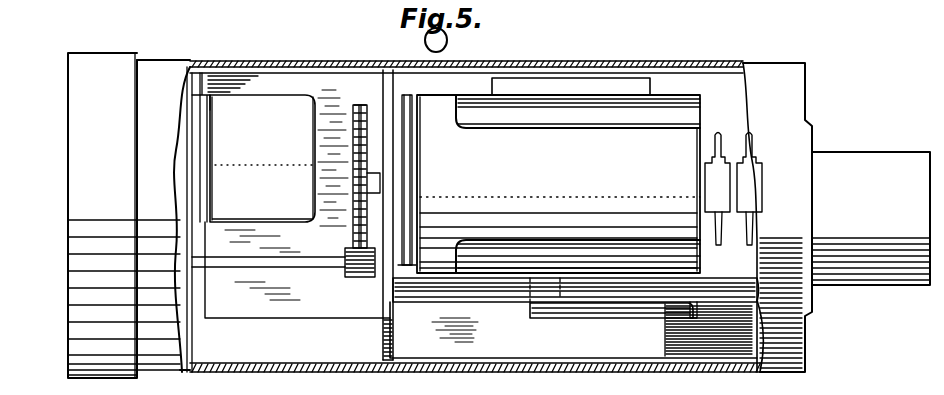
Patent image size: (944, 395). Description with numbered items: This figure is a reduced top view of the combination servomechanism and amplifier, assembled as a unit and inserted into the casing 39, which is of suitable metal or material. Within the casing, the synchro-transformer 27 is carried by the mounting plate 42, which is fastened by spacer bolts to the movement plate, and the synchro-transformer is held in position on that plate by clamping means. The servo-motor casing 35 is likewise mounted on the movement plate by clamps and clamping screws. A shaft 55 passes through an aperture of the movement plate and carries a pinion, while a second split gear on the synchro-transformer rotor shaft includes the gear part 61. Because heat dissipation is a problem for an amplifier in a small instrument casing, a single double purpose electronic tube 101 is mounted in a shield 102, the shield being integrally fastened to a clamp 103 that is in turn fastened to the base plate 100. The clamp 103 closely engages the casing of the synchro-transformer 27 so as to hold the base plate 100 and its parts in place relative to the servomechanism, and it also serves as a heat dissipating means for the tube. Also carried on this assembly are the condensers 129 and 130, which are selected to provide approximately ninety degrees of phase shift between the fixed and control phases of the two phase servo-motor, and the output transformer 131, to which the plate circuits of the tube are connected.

The synchro-transformer 27 is at (571, 152).
The servo-motor casing 35 is at (277, 103).
The casing 39 is at (545, 62).
The mounting plate 42 is at (408, 86).
The shaft 55 is at (272, 260).
The split gear part 61 is at (361, 105).
The base plate 100 is at (542, 343).
The electronic tube 101 is at (696, 318).
The shield 102 is at (648, 322).
The clamp 103 is at (660, 103).
The condenser 129 is at (585, 83).
The condenser 130 is at (730, 196).
The output transformer 131 is at (750, 177).